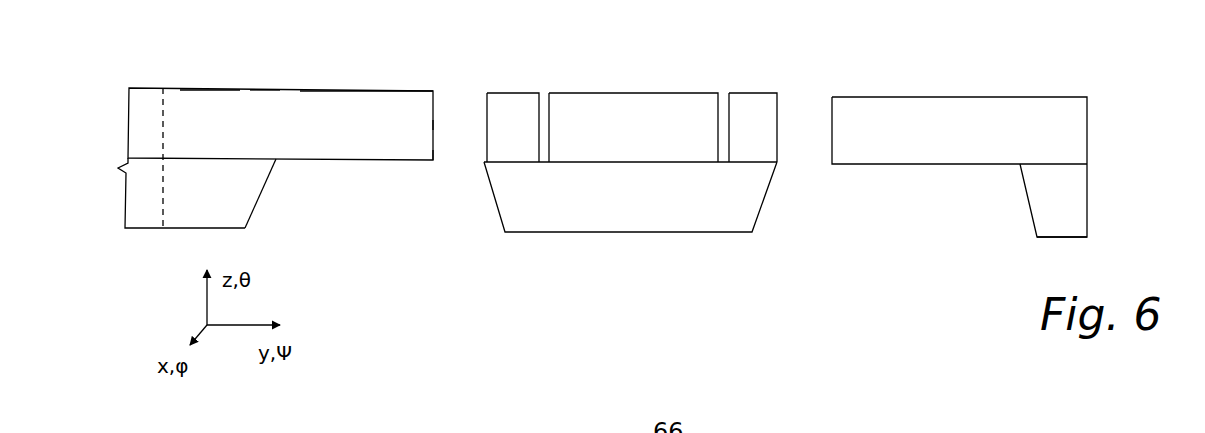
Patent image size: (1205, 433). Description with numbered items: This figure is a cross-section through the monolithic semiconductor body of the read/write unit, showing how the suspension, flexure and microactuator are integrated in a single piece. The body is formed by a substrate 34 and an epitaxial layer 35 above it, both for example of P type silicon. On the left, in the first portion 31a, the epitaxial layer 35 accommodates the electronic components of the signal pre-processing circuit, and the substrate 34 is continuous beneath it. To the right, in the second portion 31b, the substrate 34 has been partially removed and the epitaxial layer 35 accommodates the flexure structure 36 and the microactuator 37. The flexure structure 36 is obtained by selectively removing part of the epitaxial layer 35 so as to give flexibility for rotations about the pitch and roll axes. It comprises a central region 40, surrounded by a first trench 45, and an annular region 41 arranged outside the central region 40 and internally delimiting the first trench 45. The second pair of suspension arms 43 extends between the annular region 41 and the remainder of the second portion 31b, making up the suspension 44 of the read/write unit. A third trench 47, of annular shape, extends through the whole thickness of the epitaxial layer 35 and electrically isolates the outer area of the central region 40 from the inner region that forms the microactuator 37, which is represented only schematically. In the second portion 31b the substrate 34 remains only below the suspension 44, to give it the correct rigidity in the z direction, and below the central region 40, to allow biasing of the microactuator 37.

The first portion 31a is at (150, 84).
The second portion 31b is at (268, 86).
The substrate 34 is at (250, 183).
The epitaxial layer 35 is at (125, 124).
The flexure structure 36 is at (456, 172).
The microactuator 37 is at (650, 102).
The central region 40 is at (602, 88).
The annular region 41 is at (408, 95).
The second pair of suspension arms 43 is at (338, 105).
The suspension 44 is at (203, 100).
The first trench 45 is at (458, 98).
The third trench 47 is at (544, 88).